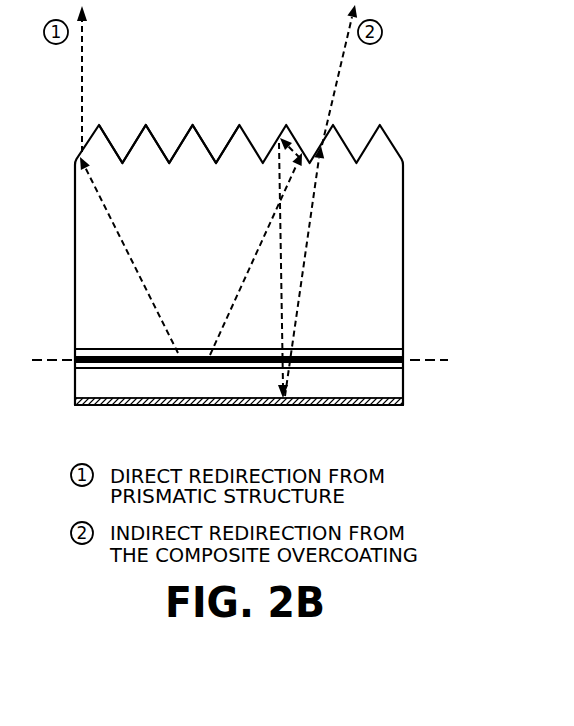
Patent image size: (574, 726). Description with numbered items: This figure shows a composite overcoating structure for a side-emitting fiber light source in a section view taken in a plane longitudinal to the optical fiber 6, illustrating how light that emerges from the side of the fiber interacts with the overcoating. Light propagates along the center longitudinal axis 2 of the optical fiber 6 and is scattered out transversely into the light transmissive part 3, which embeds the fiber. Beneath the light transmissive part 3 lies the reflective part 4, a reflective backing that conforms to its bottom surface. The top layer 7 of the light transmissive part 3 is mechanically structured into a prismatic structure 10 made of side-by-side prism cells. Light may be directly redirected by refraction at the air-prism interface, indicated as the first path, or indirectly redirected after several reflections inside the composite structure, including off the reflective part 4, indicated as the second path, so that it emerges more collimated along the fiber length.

The center longitudinal axis 2 is at (57, 361).
The light transmissive part 3 is at (393, 383).
The reflective part 4 is at (262, 400).
The optical fiber 6 is at (368, 343).
The top layer 7 is at (182, 141).
The prismatic structure 10 is at (385, 117).